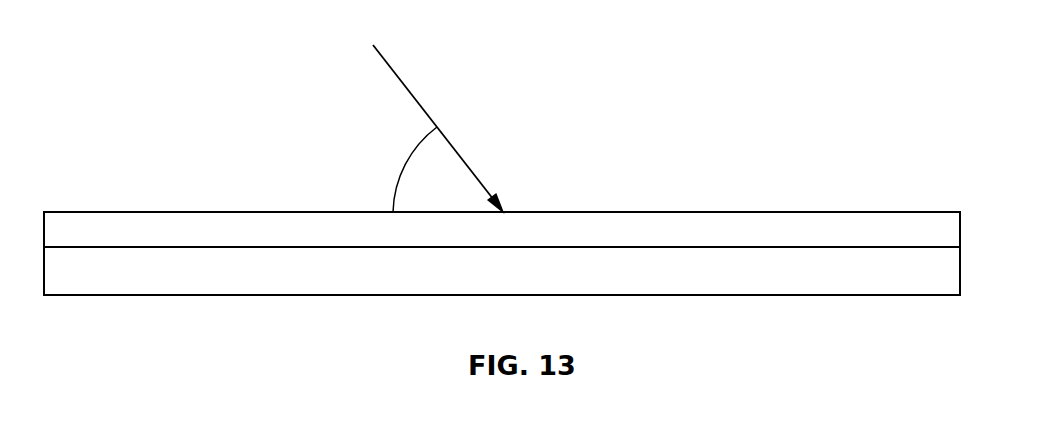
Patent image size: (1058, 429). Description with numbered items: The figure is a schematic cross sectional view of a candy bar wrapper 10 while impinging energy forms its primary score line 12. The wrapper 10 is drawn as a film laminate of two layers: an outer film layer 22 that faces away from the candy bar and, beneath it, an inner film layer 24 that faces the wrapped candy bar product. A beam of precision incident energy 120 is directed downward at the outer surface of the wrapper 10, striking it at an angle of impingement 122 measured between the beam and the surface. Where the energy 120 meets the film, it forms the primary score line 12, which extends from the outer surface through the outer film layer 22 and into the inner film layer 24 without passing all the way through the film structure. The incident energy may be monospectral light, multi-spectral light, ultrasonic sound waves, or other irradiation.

The candy bar wrapper 10 is at (772, 113).
The primary score line 12 is at (505, 210).
The outer film layer 22 is at (840, 240).
The inner film layer 24 is at (840, 287).
The precision incident energy 120 is at (415, 97).
The angle of impingement 122 is at (401, 168).